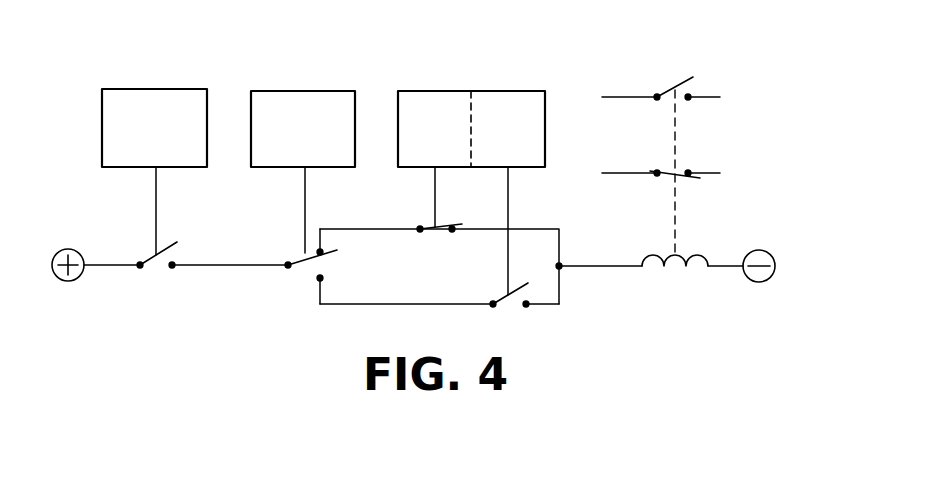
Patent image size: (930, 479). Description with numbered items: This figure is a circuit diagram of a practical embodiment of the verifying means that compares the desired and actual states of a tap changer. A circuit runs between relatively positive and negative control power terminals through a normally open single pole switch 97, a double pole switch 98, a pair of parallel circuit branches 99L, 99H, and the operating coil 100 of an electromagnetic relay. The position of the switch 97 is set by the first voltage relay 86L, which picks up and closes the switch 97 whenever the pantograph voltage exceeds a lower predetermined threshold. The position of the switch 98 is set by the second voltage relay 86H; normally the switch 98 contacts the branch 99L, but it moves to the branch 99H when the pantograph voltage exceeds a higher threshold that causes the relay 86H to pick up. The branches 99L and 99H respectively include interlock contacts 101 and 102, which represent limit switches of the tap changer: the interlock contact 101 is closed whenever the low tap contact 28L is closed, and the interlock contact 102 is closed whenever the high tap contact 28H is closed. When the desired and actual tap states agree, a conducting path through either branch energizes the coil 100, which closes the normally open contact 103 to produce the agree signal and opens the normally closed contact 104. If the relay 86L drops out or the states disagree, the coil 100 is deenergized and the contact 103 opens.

The first voltage relay 86L is at (138, 86).
The second voltage relay 86H is at (296, 88).
The low tap contact of the tap changer 28L is at (437, 88).
The high tap contact of the tap changer 28H is at (521, 88).
The normally open single pole switch 97 is at (155, 268).
The double pole switch 98 is at (316, 262).
The parallel circuit branch 99L is at (548, 229).
The parallel circuit branch 99H is at (447, 306).
The operating coil 100 is at (668, 276).
The interlock contact 101 is at (448, 232).
The interlock contact 102 is at (515, 305).
The normally open contact 103 is at (661, 82).
The normally closed contact 104 is at (664, 176).